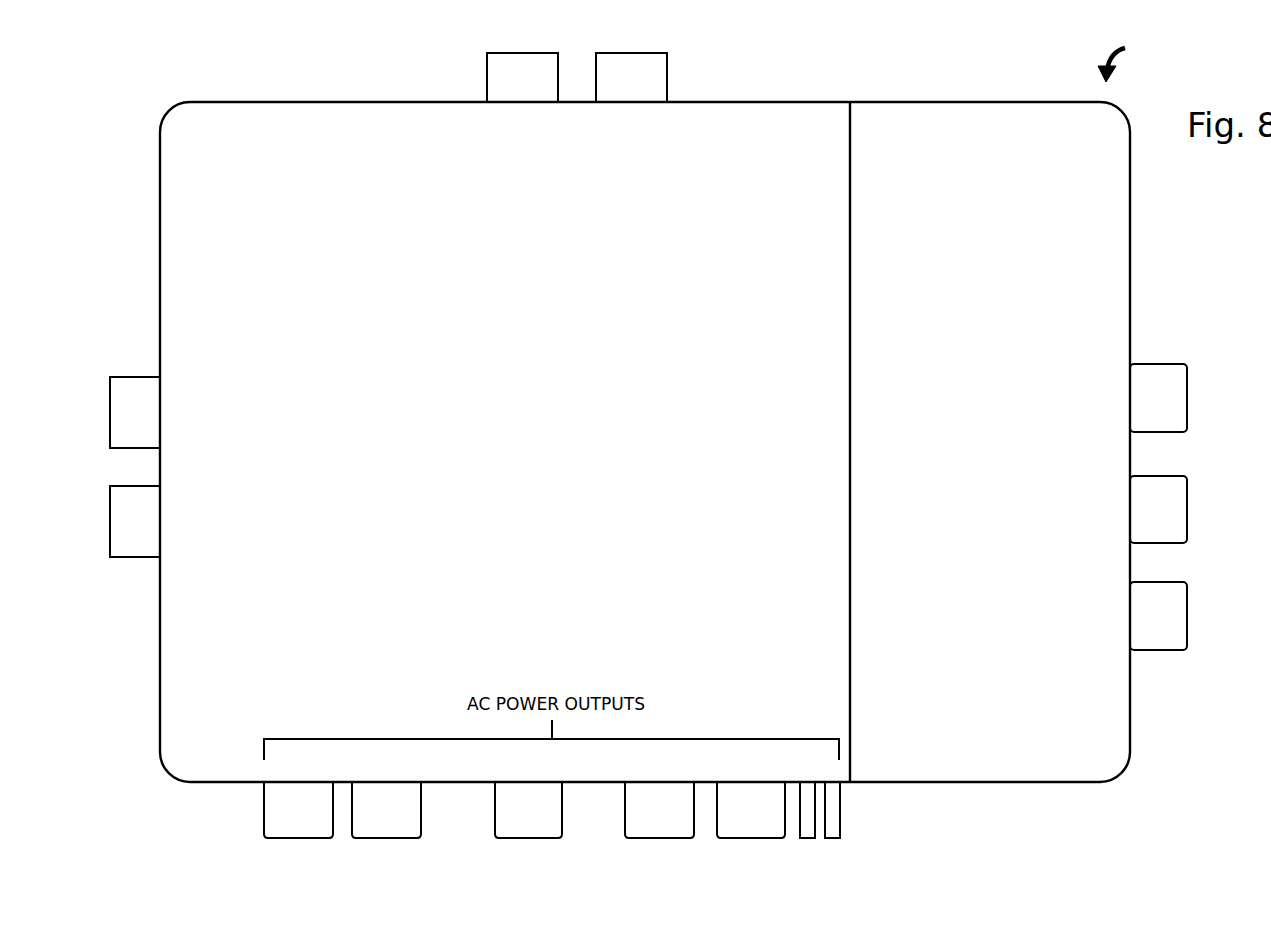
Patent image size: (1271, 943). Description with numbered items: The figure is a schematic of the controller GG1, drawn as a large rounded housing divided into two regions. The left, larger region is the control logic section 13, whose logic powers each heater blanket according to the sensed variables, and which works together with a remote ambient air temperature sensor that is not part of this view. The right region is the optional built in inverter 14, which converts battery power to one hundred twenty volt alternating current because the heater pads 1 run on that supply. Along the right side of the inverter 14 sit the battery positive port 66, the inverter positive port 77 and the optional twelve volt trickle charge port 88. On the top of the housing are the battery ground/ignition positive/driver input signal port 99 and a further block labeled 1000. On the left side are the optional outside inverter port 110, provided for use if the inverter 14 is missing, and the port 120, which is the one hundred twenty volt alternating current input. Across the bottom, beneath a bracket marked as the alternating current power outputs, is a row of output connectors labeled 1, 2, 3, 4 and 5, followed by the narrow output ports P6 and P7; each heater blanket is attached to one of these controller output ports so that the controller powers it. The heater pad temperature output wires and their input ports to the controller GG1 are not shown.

The control logic section 13 is at (768, 137).
The built in inverter 14 is at (913, 125).
The controller GG1 is at (1133, 60).
The input/control port 1000 is at (501, 89).
The battery ground/ignition positive/driver input signal port 99 is at (620, 89).
The outside inverter port 110 is at (123, 423).
The 120 volt AC input port 120 is at (123, 534).
The 12 volt trickle charge port 88 is at (1154, 408).
The inverter positive port 77 is at (1154, 521).
The battery positive port 66 is at (1154, 631).
The heater pad 1 is at (292, 824).
The AC power output 2 is at (380, 824).
The AC power output 3 is at (522, 824).
The AC power output 4 is at (653, 824).
The AC power output 5 is at (745, 824).
The output port P6 is at (805, 838).
The output port P7 is at (840, 838).